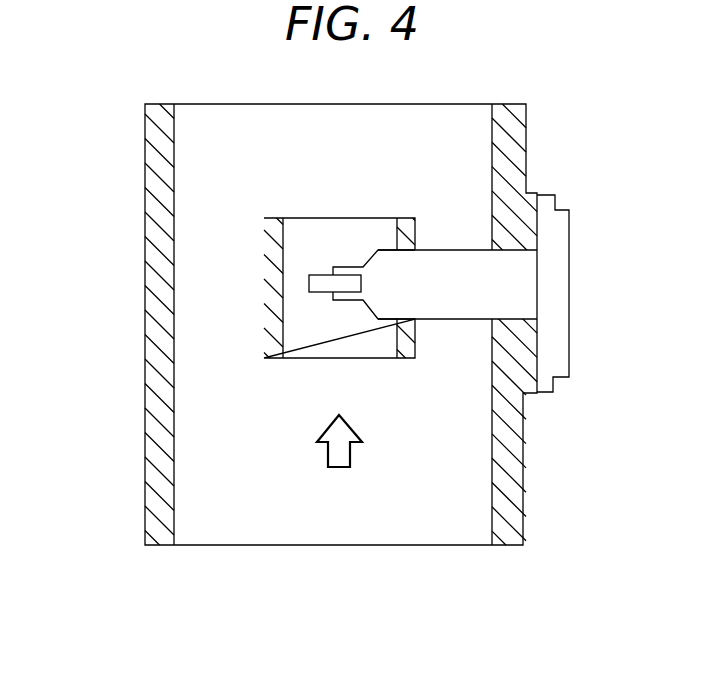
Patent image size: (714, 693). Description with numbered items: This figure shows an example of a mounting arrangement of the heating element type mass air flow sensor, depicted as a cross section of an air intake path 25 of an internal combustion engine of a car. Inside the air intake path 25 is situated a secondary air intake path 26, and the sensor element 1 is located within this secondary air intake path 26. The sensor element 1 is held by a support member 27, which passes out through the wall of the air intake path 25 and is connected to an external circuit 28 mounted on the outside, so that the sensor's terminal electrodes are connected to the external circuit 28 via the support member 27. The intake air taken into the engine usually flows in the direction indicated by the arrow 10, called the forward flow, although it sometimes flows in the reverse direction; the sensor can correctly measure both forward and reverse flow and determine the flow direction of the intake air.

The sensor element 1 is at (322, 287).
The arrow 10 is at (342, 455).
The air intake path 25 is at (165, 208).
The secondary air intake path 26 is at (273, 270).
The support member 27 is at (468, 285).
The external circuit 28 is at (550, 298).